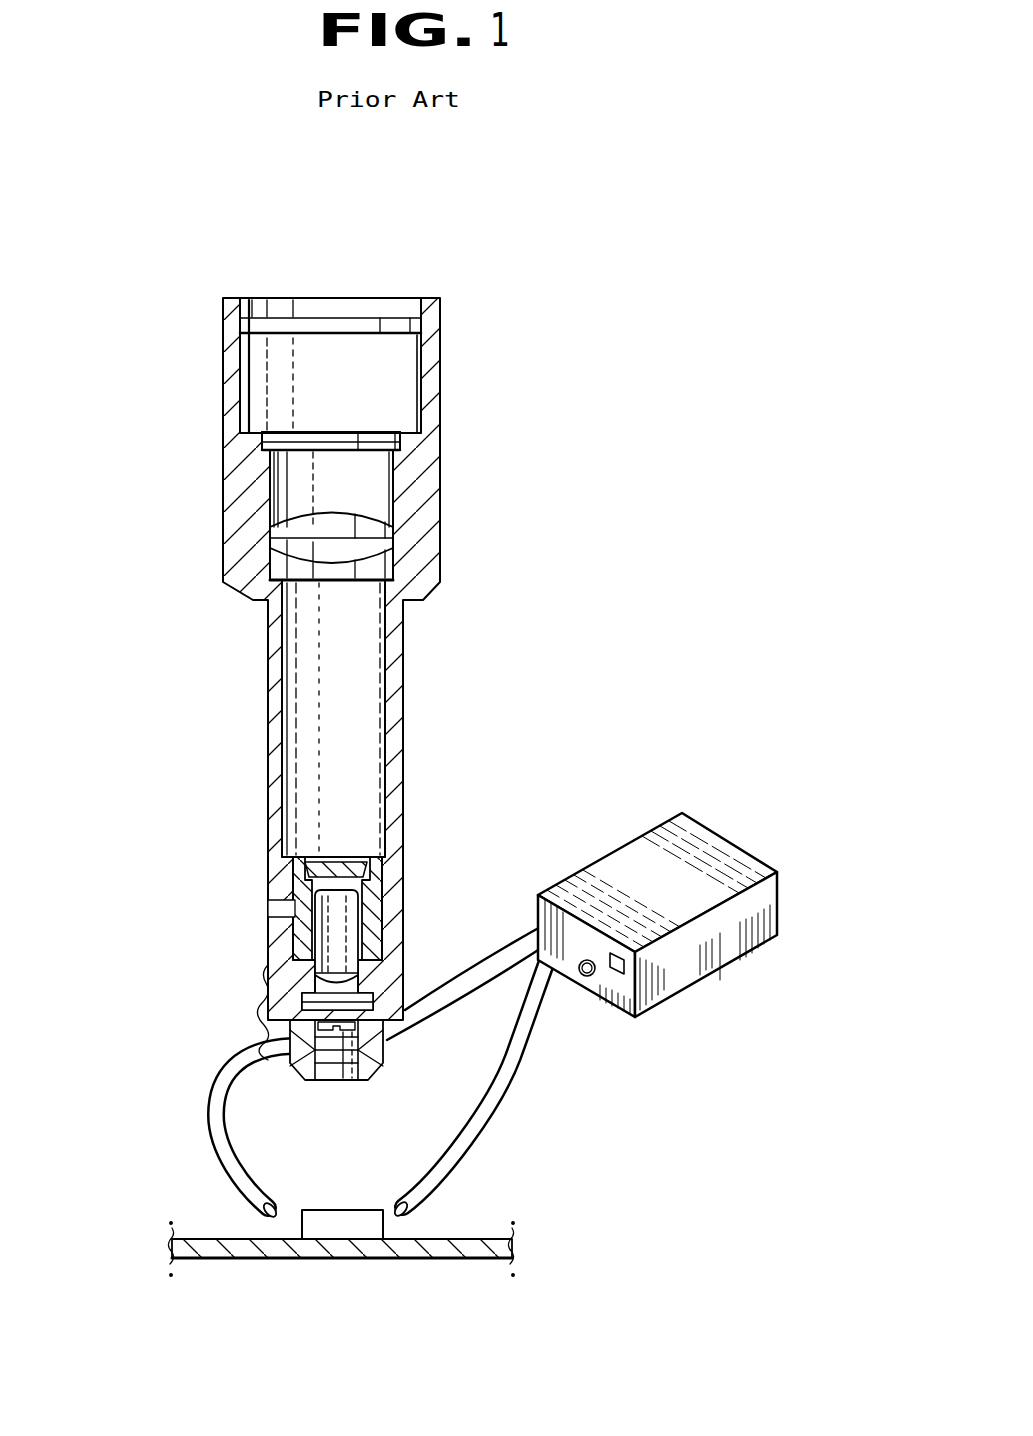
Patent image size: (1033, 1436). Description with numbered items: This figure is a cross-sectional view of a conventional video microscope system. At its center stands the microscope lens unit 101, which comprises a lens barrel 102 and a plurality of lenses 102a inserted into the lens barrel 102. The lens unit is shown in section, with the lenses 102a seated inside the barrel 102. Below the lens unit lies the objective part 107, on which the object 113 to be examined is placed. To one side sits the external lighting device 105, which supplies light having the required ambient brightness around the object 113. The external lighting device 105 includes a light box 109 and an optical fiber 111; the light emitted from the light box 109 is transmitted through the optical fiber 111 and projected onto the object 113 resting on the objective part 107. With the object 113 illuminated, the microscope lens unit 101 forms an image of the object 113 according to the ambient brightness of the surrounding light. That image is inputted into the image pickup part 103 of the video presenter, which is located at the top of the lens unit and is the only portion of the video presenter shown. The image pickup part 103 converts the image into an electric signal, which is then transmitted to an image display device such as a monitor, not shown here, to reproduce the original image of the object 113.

The microscope lens unit 101 is at (260, 770).
The lens barrel 102 is at (375, 767).
The lenses 102a is at (297, 1027).
The image pickup part 103 is at (443, 395).
The external lighting device 105 is at (687, 1015).
The objective part 107 is at (423, 1252).
The light box 109 is at (733, 853).
The optical fiber 111 is at (227, 1170).
The object 113 is at (328, 1223).